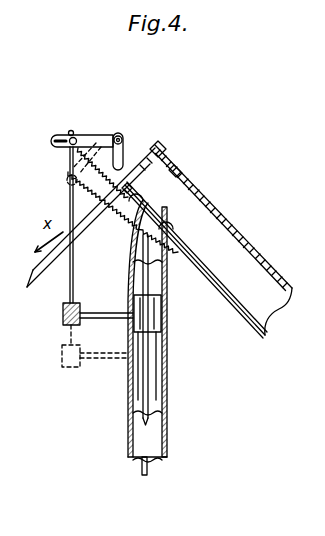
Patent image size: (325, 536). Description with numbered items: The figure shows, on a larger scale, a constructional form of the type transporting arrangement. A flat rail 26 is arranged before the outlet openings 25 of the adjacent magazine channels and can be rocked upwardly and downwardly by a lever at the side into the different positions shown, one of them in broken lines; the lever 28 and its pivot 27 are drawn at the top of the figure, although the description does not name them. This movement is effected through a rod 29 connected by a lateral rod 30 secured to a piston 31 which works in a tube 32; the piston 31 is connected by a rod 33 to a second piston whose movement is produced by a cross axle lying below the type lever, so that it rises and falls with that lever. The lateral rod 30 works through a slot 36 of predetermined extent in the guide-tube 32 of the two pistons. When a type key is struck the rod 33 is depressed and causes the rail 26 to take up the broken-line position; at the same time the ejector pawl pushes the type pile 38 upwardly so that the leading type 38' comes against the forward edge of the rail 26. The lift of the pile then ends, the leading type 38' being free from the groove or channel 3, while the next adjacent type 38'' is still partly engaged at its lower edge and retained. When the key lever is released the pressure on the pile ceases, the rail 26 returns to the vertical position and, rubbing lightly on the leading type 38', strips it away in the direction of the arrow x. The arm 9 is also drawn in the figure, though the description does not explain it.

The groove or channel 3 is at (223, 243).
The arm 9 is at (47, 277).
The outlet opening 25 is at (168, 165).
The flat rail 26 is at (100, 179).
The pivot 27 is at (119, 134).
The handle lever 28 is at (87, 136).
The rod 29 is at (74, 268).
The lateral rod 30 is at (98, 312).
The piston 31 is at (152, 314).
The tube 32 is at (164, 376).
The rod 33 is at (149, 410).
The slot 36 is at (128, 335).
The type pile 38 is at (222, 220).
The leading type 38' is at (185, 126).
The next adjacent type 38'' is at (182, 158).